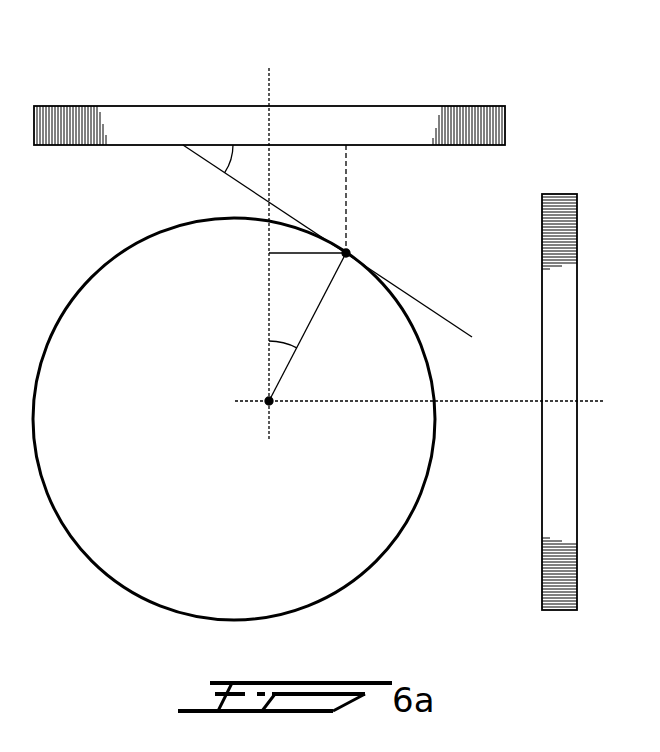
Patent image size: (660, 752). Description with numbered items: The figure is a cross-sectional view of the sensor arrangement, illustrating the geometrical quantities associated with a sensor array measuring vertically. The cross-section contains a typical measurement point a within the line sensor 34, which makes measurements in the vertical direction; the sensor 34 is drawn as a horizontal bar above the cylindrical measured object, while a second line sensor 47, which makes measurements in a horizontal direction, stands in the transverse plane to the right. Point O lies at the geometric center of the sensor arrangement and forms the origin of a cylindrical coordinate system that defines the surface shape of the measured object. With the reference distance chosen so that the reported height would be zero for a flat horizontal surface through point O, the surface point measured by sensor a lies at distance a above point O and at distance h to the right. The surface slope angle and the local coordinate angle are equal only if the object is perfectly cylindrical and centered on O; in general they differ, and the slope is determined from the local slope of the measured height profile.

The line sensor 34 is at (417, 128).
The line sensor 47 is at (577, 570).
The measurement point a is at (257, 327).
The horizontal distance h is at (307, 273).
The geometric center O is at (254, 418).